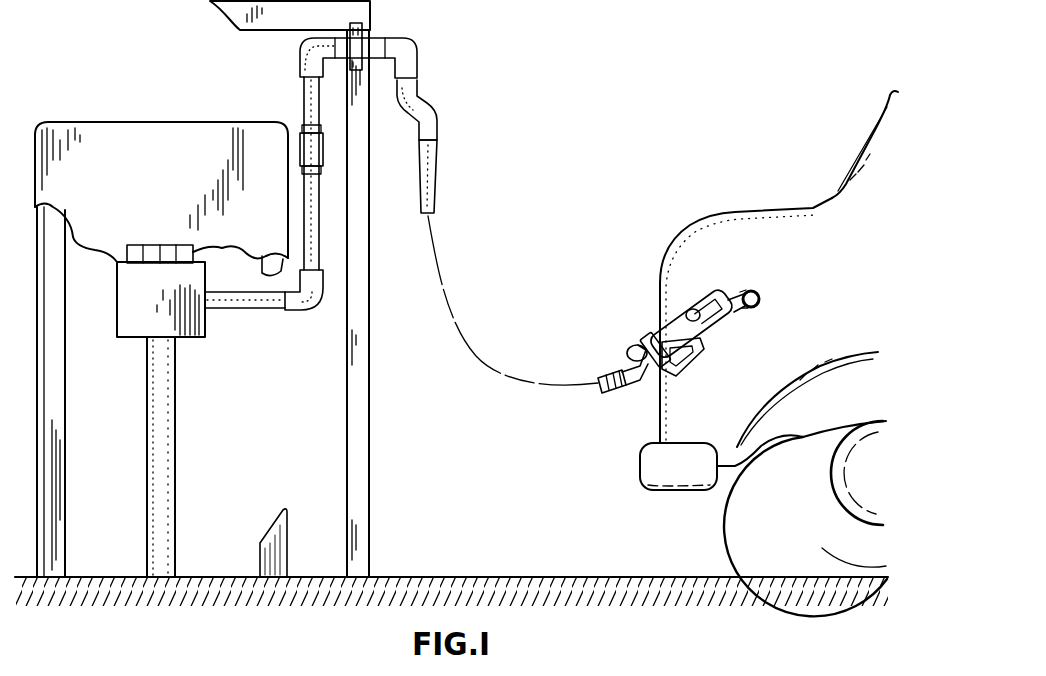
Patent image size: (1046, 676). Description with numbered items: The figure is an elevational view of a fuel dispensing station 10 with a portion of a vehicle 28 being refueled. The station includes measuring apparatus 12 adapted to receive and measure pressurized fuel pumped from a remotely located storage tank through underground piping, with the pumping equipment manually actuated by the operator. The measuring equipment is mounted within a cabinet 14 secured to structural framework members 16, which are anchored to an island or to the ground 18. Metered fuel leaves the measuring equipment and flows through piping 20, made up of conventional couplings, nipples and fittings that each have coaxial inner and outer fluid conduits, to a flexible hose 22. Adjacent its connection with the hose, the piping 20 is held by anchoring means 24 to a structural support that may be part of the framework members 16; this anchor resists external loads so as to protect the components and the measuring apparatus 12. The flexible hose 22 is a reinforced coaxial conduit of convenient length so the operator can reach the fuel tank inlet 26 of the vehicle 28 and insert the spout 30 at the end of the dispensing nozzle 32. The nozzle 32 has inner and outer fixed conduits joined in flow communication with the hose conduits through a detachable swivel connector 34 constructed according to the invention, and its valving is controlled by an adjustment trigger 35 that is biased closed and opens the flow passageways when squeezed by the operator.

The dispensing station 10 is at (592, 74).
The measuring apparatus 12 is at (205, 326).
The cabinet 14 is at (160, 128).
The structural framework members 16 is at (65, 440).
The ground 18 is at (405, 577).
The piping 20 is at (263, 308).
The flexible hose 22 is at (437, 160).
The anchoring means 24 is at (362, 30).
The fuel tank inlet 26 is at (759, 308).
The vehicle 28 is at (777, 205).
The spout 30 is at (745, 312).
The dispensing nozzle 32 is at (712, 292).
The detachable swivel connector 34 is at (633, 388).
The adjustment trigger 35 is at (677, 372).